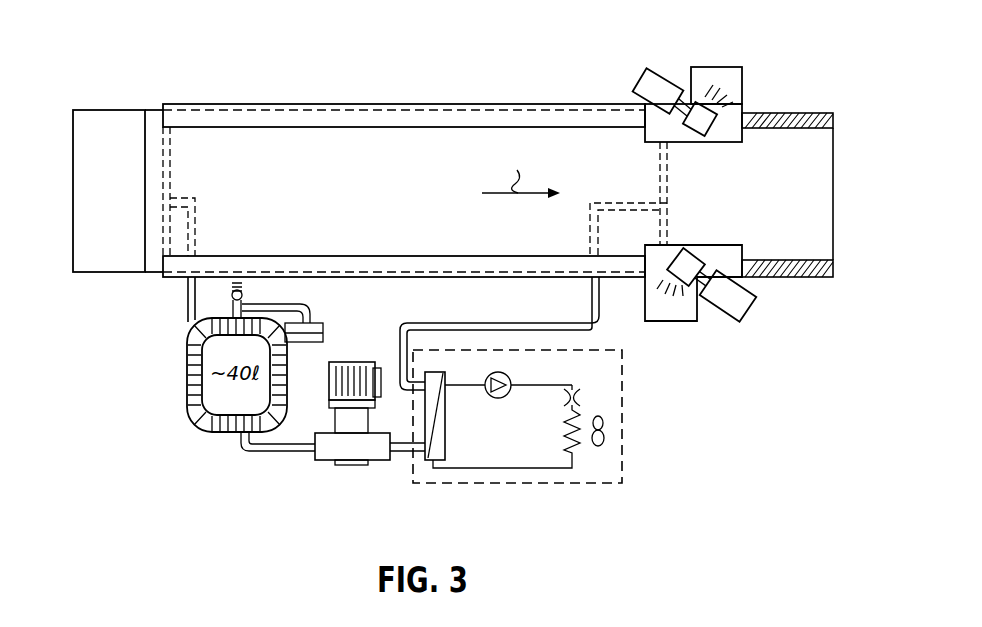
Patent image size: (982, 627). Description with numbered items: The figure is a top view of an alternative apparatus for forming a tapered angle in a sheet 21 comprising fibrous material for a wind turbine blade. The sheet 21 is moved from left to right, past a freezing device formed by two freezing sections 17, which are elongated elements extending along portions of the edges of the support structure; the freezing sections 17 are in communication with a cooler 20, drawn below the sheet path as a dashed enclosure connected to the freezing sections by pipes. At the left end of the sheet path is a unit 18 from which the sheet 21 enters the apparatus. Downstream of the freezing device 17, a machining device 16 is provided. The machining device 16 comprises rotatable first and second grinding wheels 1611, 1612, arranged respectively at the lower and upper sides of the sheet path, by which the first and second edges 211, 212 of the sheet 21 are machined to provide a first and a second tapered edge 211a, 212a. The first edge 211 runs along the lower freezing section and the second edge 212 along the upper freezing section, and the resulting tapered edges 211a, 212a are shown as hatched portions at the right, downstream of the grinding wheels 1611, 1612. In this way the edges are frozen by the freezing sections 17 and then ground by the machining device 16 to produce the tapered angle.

The machining device 16 is at (657, 54).
The first grinding wheel 1611 is at (675, 295).
The second grinding wheel 1612 is at (740, 103).
The freezing sections 17 is at (369, 100).
The feed unit 18 is at (127, 197).
The cooler 20 is at (504, 489).
The sheet 21 is at (460, 200).
The first edge 211 is at (497, 278).
The second edge 212 is at (252, 104).
The first tapered edge 211a is at (790, 277).
The second tapered edge 212a is at (811, 113).